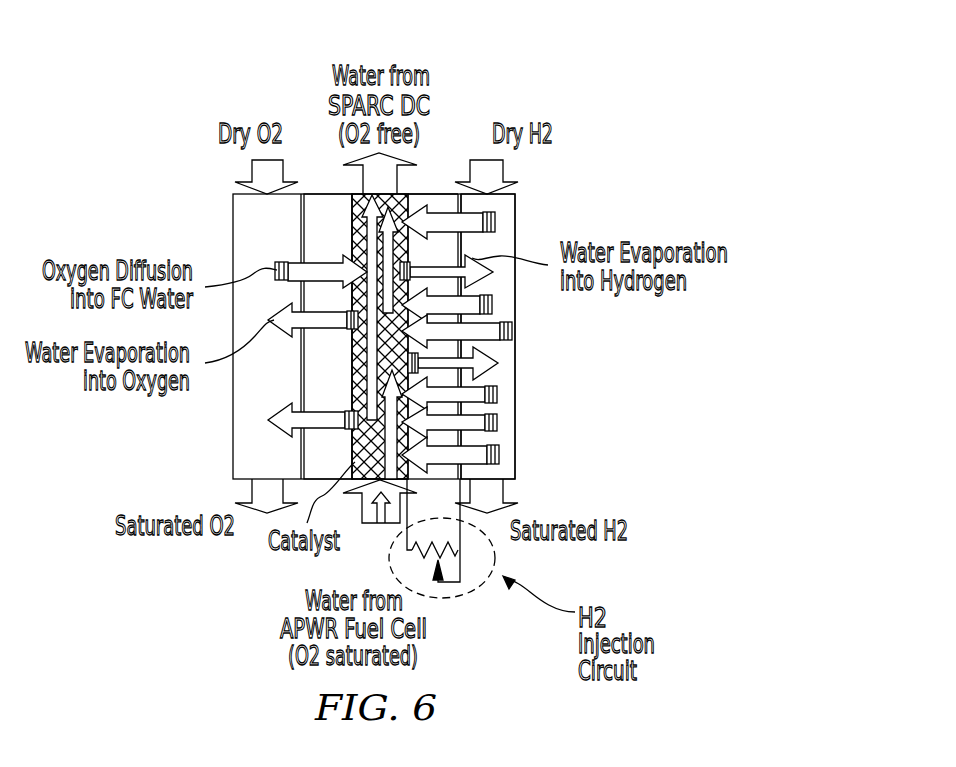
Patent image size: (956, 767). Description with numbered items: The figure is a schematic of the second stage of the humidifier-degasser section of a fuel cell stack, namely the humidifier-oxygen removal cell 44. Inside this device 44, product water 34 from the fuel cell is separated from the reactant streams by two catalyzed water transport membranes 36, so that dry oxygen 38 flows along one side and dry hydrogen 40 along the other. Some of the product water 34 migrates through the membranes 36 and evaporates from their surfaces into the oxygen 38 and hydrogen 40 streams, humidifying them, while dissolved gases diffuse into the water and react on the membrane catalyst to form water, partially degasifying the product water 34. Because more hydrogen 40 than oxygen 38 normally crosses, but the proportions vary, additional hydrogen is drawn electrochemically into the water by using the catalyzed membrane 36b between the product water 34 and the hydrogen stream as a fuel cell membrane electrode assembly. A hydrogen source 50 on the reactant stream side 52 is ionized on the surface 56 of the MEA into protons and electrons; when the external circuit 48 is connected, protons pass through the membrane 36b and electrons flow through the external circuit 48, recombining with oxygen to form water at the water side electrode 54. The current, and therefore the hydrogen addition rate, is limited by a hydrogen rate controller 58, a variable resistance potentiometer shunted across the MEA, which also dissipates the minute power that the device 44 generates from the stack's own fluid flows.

The humidifier-oxygen removal cell 44 is at (155, 104).
The product water 34 is at (365, 524).
The catalyzed water transport membranes 36 is at (331, 210).
The catalyzed membrane 36b is at (440, 203).
The oxygen 38 is at (250, 162).
The hydrogen 40 is at (505, 165).
The external circuit 48 is at (490, 570).
The hydrogen source 50 is at (485, 337).
The reactant stream side 52 is at (462, 203).
The water side electrode 54 is at (427, 193).
The MEA surface 56 is at (470, 246).
The hydrogen rate controller 58 is at (430, 556).